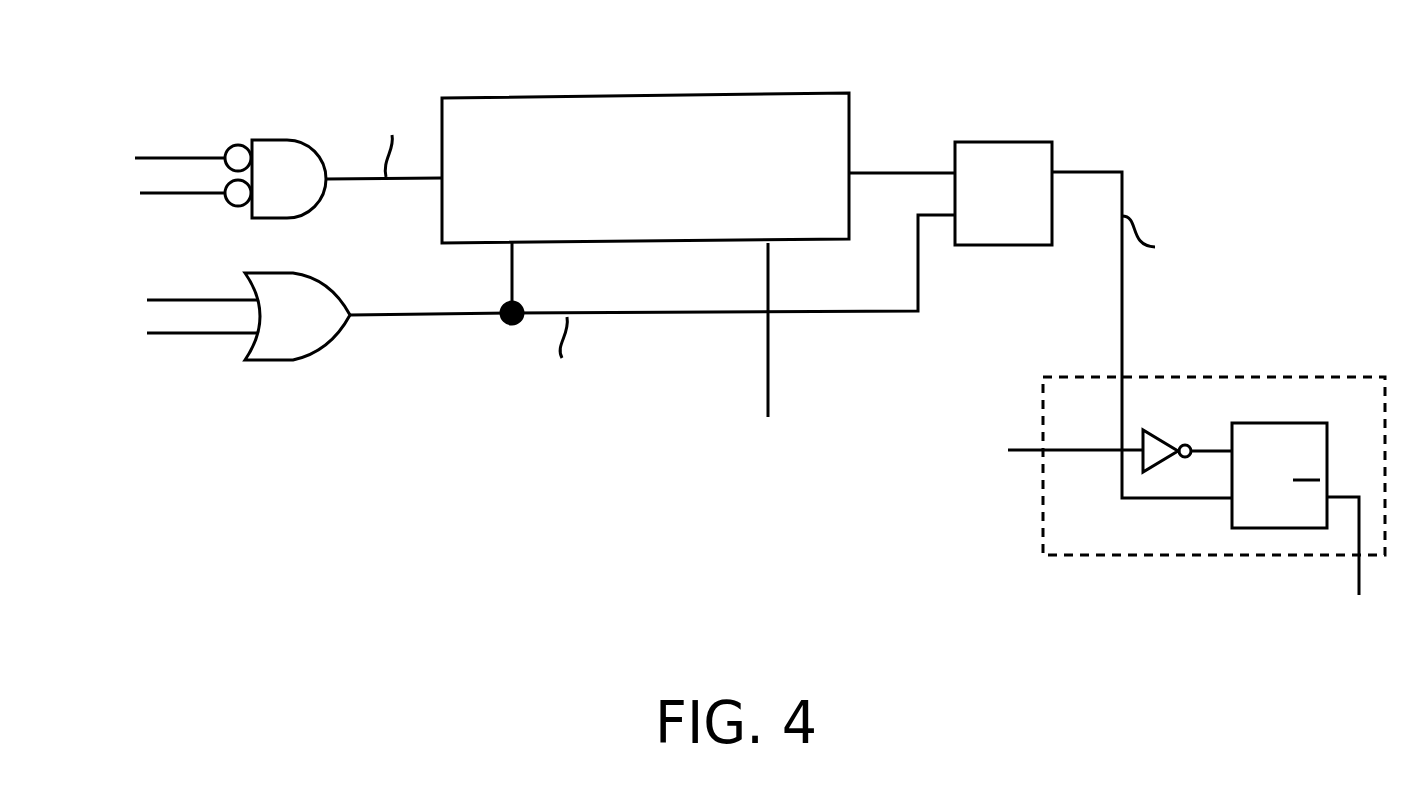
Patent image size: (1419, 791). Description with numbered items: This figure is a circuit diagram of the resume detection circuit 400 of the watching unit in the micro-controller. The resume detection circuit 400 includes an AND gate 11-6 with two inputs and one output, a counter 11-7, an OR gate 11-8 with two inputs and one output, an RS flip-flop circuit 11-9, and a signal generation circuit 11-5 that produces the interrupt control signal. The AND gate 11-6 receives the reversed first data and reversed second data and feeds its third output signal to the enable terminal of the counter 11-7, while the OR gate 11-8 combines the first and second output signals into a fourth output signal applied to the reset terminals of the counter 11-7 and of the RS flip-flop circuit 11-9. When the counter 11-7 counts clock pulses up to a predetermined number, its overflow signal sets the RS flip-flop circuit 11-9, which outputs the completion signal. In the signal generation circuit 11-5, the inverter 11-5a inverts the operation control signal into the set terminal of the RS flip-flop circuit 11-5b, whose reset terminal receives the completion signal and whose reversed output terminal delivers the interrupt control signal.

The resume detection circuit 400 is at (1080, 112).
The AND gate 11-6 is at (283, 153).
The counter 11-7 is at (800, 113).
The OR gate 11-8 is at (298, 348).
The RS flip-flop circuit 11-9 is at (1003, 153).
The signal generation circuit 11-5 is at (1037, 532).
The inverter 11-5a is at (1155, 430).
The RS flip-flop circuit 11-5b is at (1278, 435).